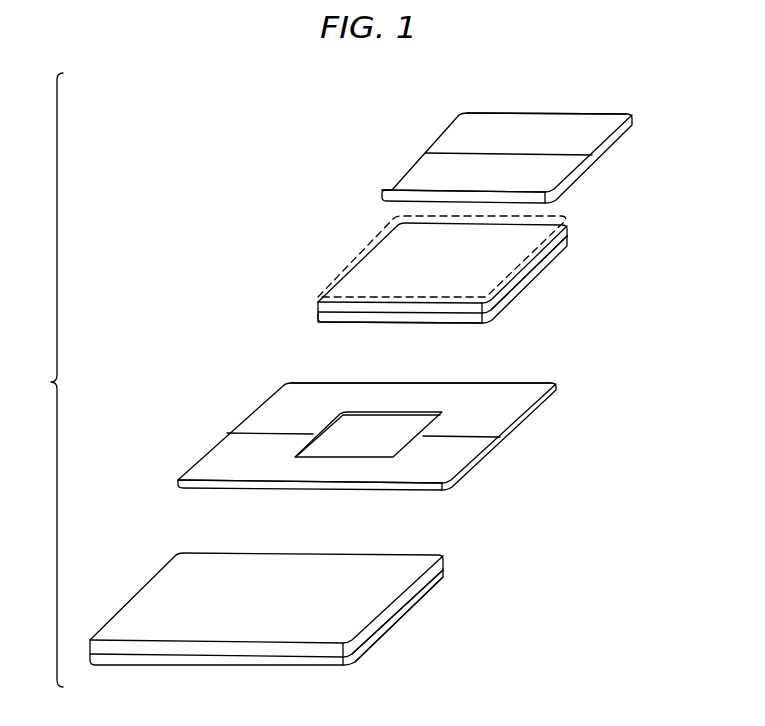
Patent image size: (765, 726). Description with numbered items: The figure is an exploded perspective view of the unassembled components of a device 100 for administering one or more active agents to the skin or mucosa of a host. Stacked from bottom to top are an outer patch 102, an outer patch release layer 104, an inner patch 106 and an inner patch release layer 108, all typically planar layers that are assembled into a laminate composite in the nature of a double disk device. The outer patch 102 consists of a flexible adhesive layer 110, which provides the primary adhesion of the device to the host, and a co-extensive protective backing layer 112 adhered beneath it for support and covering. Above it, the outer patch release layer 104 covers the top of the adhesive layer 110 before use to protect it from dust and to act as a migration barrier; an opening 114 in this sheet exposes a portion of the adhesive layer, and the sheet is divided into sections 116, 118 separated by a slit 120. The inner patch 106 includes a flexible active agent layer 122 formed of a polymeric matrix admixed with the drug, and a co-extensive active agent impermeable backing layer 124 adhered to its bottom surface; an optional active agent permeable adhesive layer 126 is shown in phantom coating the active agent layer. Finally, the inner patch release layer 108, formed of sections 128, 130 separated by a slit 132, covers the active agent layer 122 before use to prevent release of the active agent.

The device 100 is at (43, 380).
The outer patch 102 is at (450, 553).
The outer patch release layer 104 is at (560, 384).
The inner patch 106 is at (568, 238).
The inner patch release layer 108 is at (634, 130).
The adhesive layer 110 is at (412, 602).
The backing layer 112 is at (392, 630).
The opening 114 is at (342, 435).
The section 116 is at (462, 466).
The section 118 is at (523, 392).
The slit 120 is at (248, 432).
The active agent layer 122 is at (522, 283).
The active agent impermeable backing layer 124 is at (317, 322).
The active agent permeable adhesive layer 126 is at (348, 250).
The section 128 is at (400, 182).
The section 130 is at (553, 122).
The slit 132 is at (572, 157).